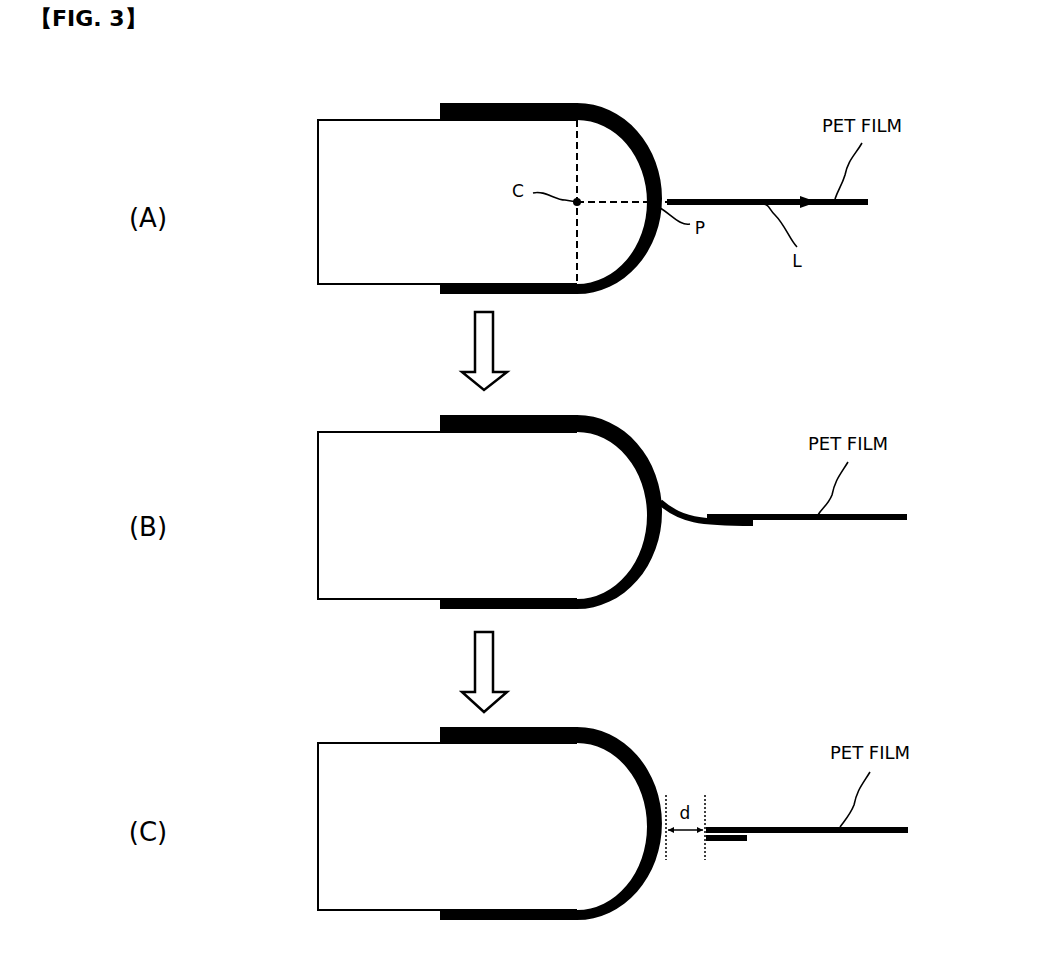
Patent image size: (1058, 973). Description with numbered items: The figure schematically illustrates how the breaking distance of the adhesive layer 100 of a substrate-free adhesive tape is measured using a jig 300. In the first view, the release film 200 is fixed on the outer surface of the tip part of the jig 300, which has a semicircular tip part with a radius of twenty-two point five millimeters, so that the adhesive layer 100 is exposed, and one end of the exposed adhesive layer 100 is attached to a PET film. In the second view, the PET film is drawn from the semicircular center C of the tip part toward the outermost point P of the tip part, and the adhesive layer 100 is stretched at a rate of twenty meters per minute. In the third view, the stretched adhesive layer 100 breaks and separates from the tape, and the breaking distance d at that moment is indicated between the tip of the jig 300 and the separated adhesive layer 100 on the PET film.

The adhesive layer 100 is at (636, 124).
The release film 200 is at (637, 258).
The jig 300 is at (318, 180).